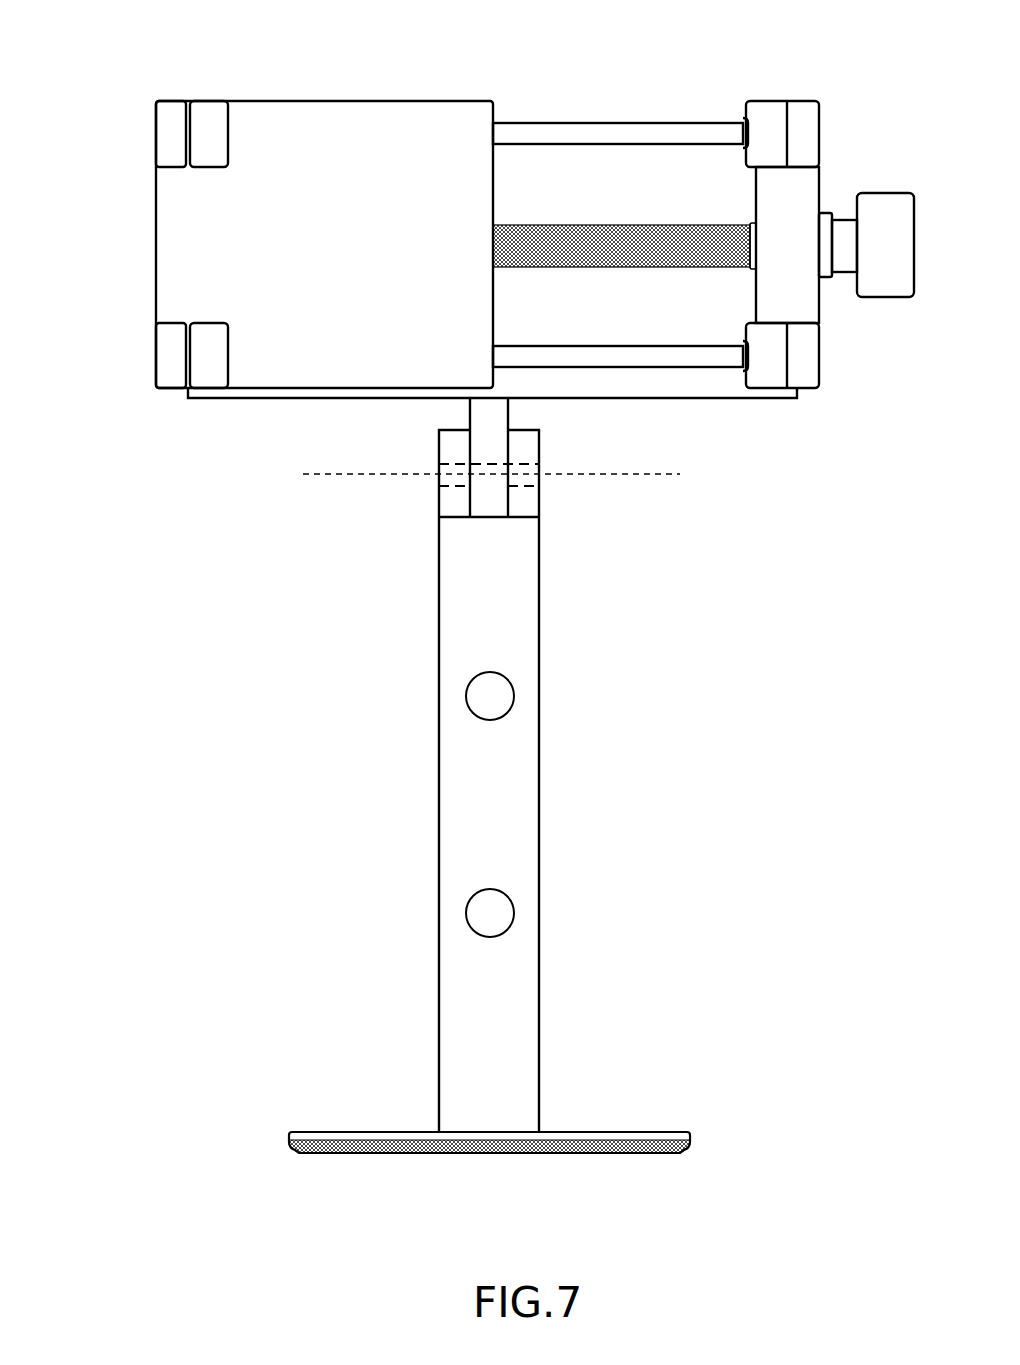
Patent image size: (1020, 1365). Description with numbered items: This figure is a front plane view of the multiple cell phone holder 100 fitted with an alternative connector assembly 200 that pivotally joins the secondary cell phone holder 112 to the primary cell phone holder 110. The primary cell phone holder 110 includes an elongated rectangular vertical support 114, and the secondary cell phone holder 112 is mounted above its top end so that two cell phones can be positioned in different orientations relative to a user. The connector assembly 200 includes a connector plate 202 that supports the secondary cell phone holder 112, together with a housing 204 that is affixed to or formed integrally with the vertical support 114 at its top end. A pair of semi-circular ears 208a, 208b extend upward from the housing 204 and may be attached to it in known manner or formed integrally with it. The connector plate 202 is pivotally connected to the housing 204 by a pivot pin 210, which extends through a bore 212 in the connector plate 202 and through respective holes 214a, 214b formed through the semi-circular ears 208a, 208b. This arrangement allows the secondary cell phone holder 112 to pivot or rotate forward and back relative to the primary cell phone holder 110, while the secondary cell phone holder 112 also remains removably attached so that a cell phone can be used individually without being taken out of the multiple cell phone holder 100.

The multiple cell phone holder 100 is at (164, 48).
The secondary cell phone holder 112 is at (125, 263).
The connector plate 202 is at (772, 398).
The connector assembly 200 is at (270, 486).
The housing 204 is at (480, 412).
The bore 212 is at (486, 462).
The pivot pin 210 is at (540, 466).
The hole 214a is at (438, 487).
The hole 214b is at (540, 488).
The semi-circular ear 208a is at (450, 505).
The semi-circular ear 208b is at (530, 508).
The primary cell phone holder 110 is at (365, 739).
The vertical support 114 is at (539, 793).